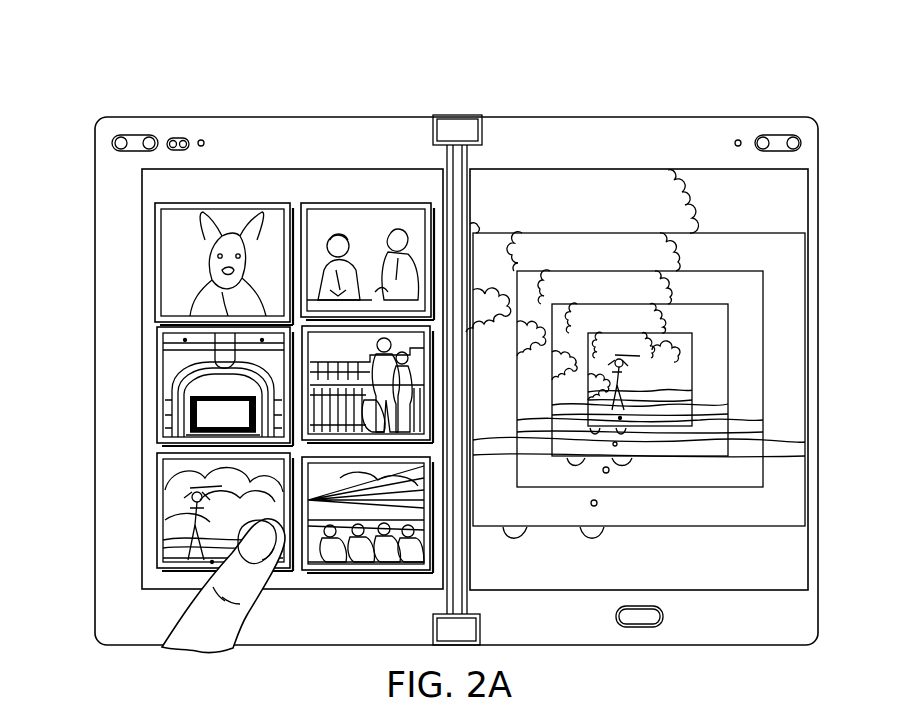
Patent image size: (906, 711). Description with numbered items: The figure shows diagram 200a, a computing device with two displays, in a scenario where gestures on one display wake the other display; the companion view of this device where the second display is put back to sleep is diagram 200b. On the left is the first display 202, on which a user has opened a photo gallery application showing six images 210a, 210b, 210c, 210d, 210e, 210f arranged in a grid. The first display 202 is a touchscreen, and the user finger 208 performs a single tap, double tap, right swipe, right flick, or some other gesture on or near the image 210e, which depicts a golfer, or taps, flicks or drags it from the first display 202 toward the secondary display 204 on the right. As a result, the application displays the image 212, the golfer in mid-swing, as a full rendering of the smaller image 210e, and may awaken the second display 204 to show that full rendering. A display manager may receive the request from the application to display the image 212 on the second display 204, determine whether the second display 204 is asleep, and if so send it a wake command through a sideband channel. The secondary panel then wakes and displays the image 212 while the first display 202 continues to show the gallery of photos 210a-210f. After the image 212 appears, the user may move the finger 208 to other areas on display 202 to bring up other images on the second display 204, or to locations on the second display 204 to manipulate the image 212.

The diagram 200a is at (742, 73).
The diagram 200b is at (774, 710).
The first display 202 is at (248, 169).
The second display 204 is at (563, 169).
The user finger 208 is at (262, 586).
The image 210a is at (224, 264).
The image 210b is at (367, 261).
The image 210c is at (225, 386).
The image 210d is at (367, 384).
The image 210e is at (225, 512).
The image 210f is at (367, 515).
The image 212 is at (752, 287).